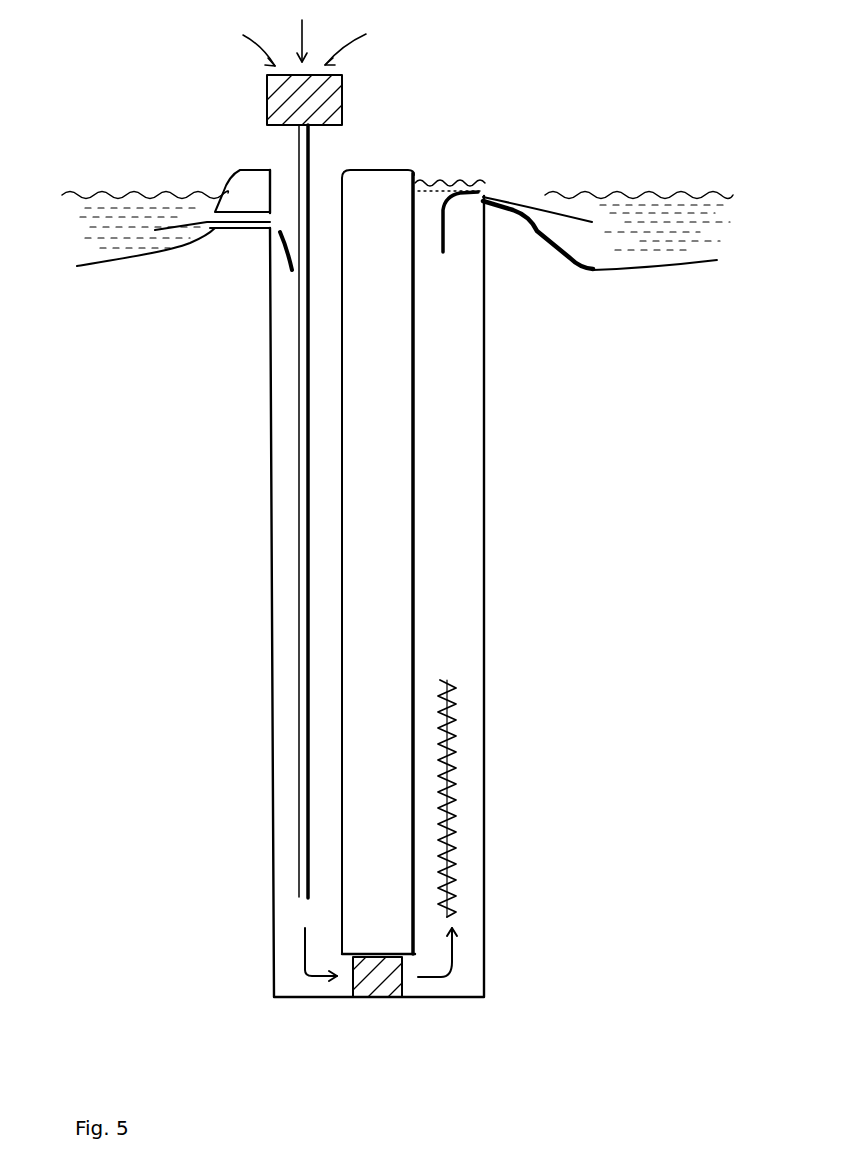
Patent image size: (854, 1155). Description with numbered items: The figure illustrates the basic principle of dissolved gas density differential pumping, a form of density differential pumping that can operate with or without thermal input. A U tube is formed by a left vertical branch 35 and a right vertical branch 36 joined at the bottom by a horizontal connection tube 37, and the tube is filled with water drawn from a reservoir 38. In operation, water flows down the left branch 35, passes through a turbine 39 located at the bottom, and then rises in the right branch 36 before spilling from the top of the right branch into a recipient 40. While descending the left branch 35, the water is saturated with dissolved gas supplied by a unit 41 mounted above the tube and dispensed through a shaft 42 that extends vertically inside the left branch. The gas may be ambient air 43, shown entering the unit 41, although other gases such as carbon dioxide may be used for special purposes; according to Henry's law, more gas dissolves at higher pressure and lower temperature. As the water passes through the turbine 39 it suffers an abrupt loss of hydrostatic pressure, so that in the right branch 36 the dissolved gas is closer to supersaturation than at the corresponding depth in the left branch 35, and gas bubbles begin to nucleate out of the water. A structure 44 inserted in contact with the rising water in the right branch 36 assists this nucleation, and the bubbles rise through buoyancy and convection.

The left vertical branch 35 is at (268, 514).
The right vertical branch 36 is at (485, 528).
The horizontal connection tube 37 is at (388, 1010).
The reservoir 38 is at (124, 223).
The turbine 39 is at (370, 985).
The recipient 40 is at (652, 215).
The unit 41 is at (344, 97).
The shaft 42 is at (298, 462).
The ambient air 43 is at (304, 35).
The structure 44 is at (457, 802).